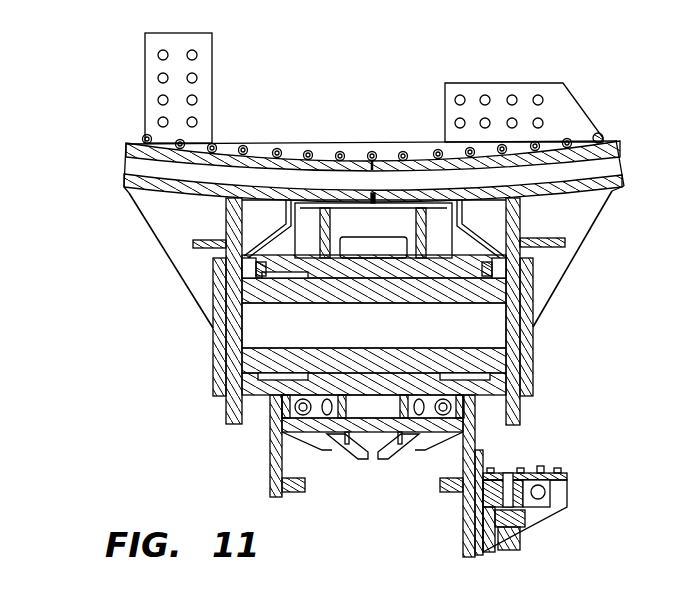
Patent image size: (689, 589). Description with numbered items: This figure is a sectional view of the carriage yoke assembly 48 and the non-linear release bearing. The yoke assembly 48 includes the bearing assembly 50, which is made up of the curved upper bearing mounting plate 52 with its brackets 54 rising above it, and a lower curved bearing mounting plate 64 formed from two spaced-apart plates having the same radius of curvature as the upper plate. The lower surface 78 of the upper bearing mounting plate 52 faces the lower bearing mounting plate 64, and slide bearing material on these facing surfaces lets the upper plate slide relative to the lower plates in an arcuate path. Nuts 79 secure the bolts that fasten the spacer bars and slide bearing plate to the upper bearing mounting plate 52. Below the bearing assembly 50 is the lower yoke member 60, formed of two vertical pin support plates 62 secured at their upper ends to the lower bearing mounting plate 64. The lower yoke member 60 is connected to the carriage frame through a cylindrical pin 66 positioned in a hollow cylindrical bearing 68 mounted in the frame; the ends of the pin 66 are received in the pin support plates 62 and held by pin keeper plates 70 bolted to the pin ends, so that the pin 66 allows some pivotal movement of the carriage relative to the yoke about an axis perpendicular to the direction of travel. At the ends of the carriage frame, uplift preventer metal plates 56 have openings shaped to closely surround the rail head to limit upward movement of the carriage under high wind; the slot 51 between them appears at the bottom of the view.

The yoke assembly 48 is at (148, 310).
The bearing assembly 50 is at (103, 97).
The slot 51 is at (376, 460).
The upper bearing mounting plate 52 is at (620, 140).
The brackets 54 is at (213, 53).
The metal plates 56 is at (350, 462).
The lower yoke member 60 is at (582, 256).
The pin support plates 62 is at (226, 418).
The lower bearing mounting plate 64 is at (122, 195).
The cylindrical pin 66 is at (510, 290).
The hollow cylindrical bearing 68 is at (318, 258).
The pin keeper plates 70 is at (213, 367).
The surface 78 is at (213, 280).
The nuts 79 is at (599, 132).